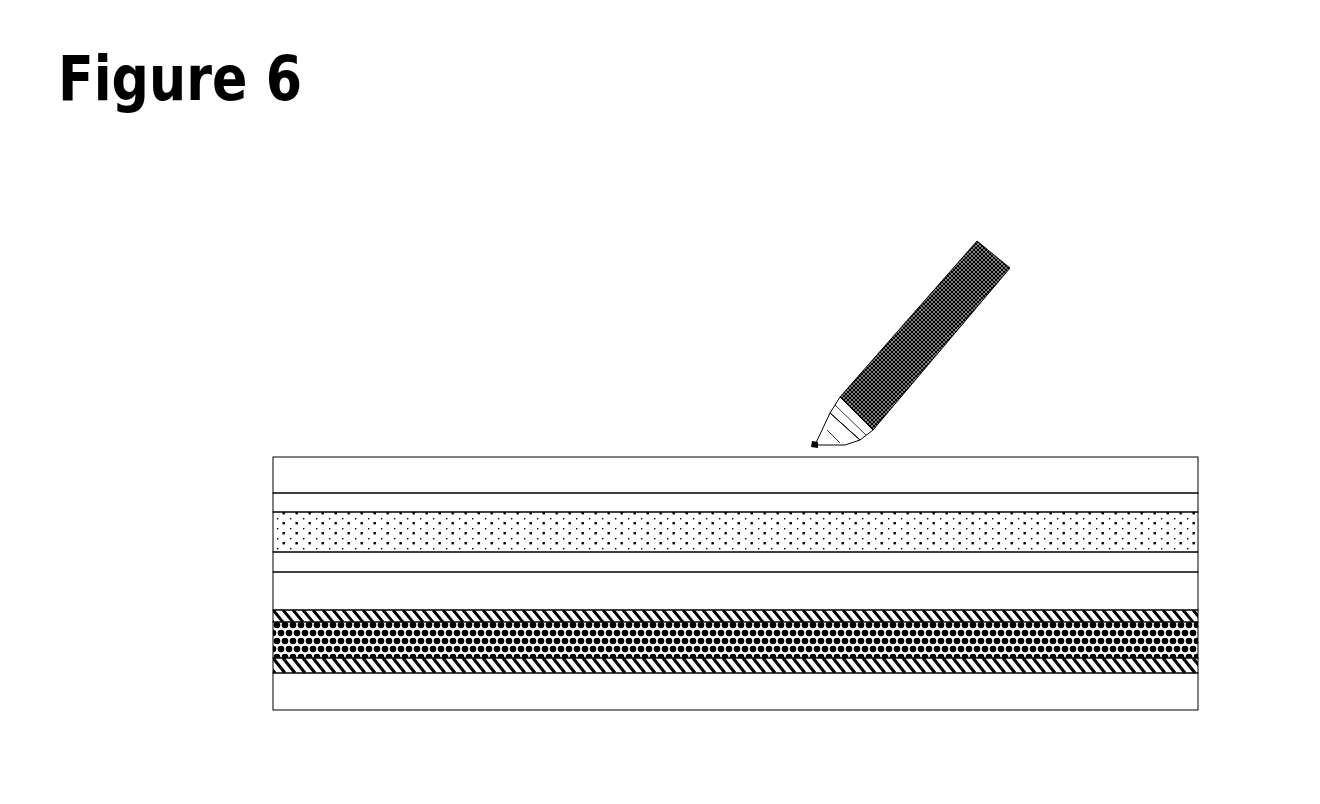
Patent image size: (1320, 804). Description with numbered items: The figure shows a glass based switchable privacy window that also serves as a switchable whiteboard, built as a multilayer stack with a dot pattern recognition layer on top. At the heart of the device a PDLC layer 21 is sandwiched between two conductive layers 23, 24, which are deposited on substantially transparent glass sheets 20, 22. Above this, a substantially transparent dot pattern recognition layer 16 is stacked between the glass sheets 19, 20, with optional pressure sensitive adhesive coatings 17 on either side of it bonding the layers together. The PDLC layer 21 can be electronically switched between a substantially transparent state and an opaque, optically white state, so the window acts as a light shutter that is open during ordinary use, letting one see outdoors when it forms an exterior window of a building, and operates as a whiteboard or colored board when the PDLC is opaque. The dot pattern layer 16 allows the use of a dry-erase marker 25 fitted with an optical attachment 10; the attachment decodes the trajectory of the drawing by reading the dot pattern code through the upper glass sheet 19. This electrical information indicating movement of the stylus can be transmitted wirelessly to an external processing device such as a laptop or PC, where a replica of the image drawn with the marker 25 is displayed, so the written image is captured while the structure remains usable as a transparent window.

The optical attachment 10 is at (909, 284).
The dry-erase marker 25 is at (814, 407).
The glass sheet 19 is at (1198, 475).
The pressure sensitive adhesive coatings 17 is at (273, 507).
The dot pattern recognition layer 16 is at (1198, 535).
The glass sheet 20 is at (1198, 592).
The conductive layer 23 is at (273, 617).
The PDLC layer 21 is at (1198, 638).
The conductive layer 24 is at (273, 668).
The glass sheet 22 is at (1198, 690).